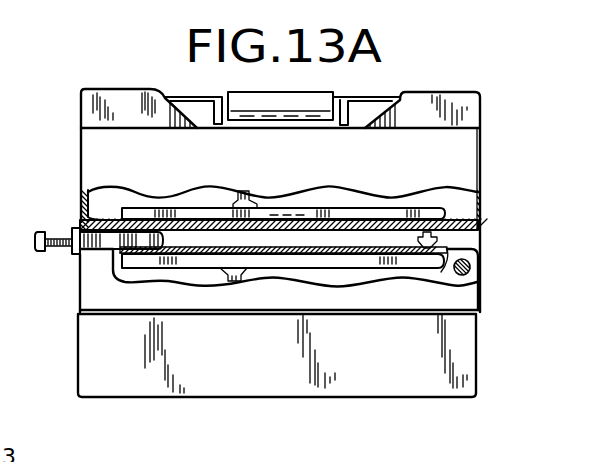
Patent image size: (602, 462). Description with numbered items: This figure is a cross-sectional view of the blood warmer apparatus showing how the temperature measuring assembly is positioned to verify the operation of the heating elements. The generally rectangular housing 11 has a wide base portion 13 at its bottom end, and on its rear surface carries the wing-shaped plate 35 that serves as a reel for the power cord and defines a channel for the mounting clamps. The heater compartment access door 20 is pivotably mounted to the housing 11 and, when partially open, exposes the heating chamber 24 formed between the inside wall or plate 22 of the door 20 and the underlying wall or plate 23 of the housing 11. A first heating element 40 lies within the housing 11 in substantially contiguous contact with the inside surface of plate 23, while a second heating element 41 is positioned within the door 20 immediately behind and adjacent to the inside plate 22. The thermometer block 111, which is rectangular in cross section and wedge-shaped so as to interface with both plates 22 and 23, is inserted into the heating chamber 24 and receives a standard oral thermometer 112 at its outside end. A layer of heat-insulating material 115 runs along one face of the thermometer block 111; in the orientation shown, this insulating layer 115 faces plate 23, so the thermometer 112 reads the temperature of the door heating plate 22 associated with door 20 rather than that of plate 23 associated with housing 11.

The housing 11 is at (92, 158).
The base portion 13 is at (217, 384).
The heater compartment access door 20 is at (86, 292).
The inside wall or plate of the door 22 is at (343, 254).
The wall or plate of housing 23 is at (338, 231).
The heating chamber 24 is at (245, 244).
The wing-shaped plate 35 is at (366, 101).
The first heating element 40 is at (189, 214).
The second heating element 41 is at (208, 262).
The thermometer block 111 is at (146, 252).
The thermometer 112 is at (53, 250).
The layer of heat-insulating material 115 is at (104, 222).